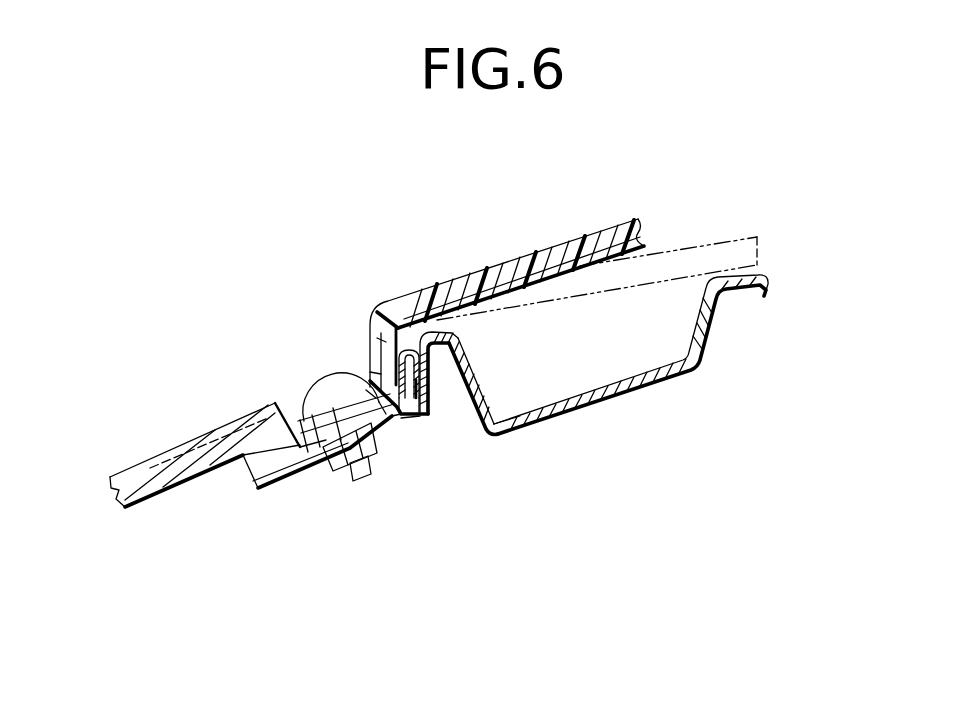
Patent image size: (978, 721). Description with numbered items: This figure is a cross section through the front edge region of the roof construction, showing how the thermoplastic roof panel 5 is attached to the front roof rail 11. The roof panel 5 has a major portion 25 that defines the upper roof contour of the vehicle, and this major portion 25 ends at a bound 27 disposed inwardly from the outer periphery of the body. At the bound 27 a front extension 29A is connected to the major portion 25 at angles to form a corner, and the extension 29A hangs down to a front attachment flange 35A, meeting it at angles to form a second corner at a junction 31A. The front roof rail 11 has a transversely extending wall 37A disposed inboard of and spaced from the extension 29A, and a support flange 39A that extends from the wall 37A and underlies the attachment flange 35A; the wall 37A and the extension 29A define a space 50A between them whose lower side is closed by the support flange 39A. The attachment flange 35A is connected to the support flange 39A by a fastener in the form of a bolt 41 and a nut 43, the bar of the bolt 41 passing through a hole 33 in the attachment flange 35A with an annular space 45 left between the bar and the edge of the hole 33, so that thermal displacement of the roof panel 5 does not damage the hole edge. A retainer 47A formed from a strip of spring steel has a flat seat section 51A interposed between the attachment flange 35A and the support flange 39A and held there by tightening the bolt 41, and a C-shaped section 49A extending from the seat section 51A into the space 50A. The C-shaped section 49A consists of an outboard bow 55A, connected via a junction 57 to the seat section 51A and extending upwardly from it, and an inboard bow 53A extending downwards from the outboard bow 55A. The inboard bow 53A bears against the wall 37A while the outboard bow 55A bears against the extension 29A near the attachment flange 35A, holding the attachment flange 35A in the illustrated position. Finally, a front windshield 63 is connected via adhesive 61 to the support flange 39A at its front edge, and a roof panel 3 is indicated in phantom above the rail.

The roof panel 3 is at (777, 271).
The roof panel 5 is at (569, 226).
The front roof rail 11 is at (632, 398).
The major portion 25 is at (497, 262).
The bound 27 is at (378, 312).
The front extension 29A is at (378, 338).
The junction 31A is at (398, 430).
The hole 33 is at (366, 390).
The front attachment flange 35A is at (283, 440).
The transversely extending wall 37A is at (472, 360).
The support flange 39A is at (430, 415).
The bolt 41 is at (312, 384).
The nut 43 is at (380, 463).
The annular space 45 is at (320, 445).
The retainer 47A is at (411, 349).
The C-shaped section 49A is at (440, 403).
The space 50A is at (413, 417).
The seat section 51A is at (293, 440).
The inboard bow 53A is at (440, 323).
The outboard bow 55A is at (377, 370).
The junction 57 is at (405, 425).
The adhesive 61 is at (243, 470).
The front windshield 63 is at (213, 428).